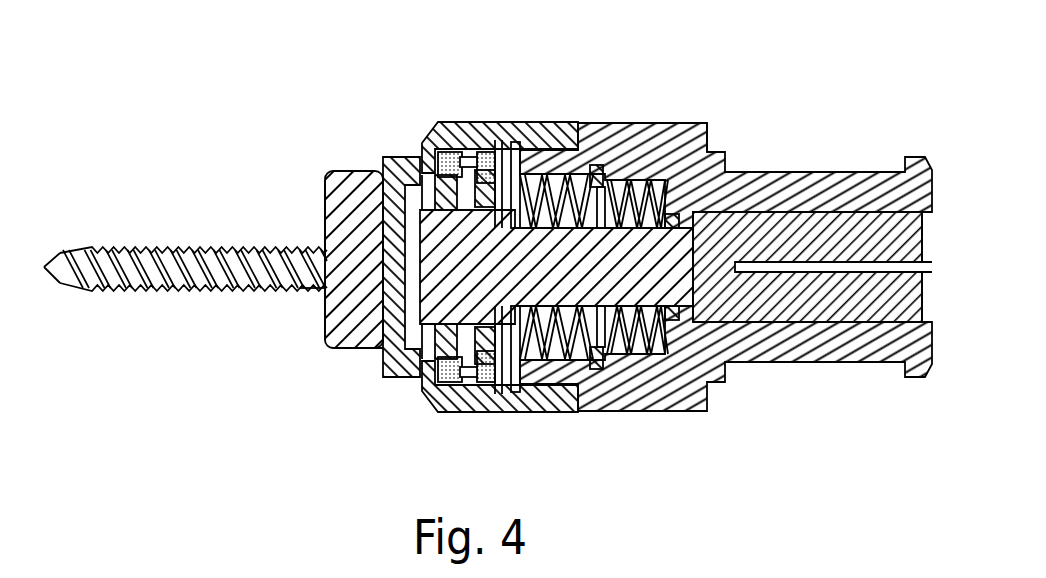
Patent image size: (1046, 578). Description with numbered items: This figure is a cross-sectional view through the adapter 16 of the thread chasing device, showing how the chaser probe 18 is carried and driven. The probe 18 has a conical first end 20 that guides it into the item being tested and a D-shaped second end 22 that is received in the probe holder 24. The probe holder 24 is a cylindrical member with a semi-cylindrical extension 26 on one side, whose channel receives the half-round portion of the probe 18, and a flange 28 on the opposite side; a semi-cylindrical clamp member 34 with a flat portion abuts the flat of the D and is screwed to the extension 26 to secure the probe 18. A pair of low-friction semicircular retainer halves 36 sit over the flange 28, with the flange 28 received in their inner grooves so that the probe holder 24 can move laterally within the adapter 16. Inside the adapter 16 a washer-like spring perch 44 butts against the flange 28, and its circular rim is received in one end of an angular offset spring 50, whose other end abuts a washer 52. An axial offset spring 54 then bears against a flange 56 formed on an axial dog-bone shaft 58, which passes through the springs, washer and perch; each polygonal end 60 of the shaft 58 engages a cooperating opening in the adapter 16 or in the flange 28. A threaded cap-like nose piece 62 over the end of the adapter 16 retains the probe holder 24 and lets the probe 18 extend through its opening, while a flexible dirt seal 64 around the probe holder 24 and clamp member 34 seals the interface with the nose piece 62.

The adapter 16 is at (632, 123).
The chaser probe 18 is at (195, 247).
The conical first end 20 is at (53, 283).
The D-shaped second end 22 is at (322, 292).
The probe holder 24 is at (362, 352).
The semi-cylindrical extension 26 is at (327, 352).
The flange 28 is at (430, 125).
The semi-cylindrical clamp member 34 is at (327, 203).
The retainer halves 36 is at (465, 123).
The spring perch 44 is at (515, 413).
The angular offset spring 50 is at (552, 123).
The washer 52 is at (600, 385).
The axial offset spring 54 is at (593, 123).
The flange 56 is at (697, 123).
The dog-bone shaft 58 is at (695, 365).
The polygonal end 60 is at (728, 172).
The nose piece 62 is at (507, 123).
The dirt seal 64 is at (383, 160).